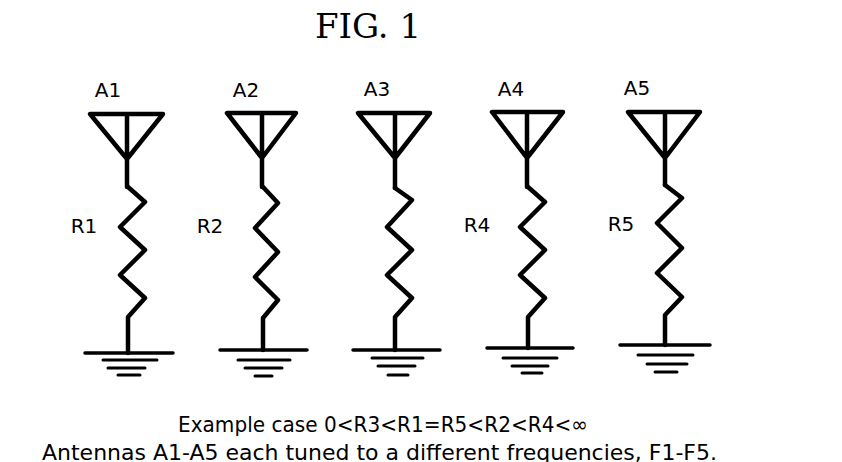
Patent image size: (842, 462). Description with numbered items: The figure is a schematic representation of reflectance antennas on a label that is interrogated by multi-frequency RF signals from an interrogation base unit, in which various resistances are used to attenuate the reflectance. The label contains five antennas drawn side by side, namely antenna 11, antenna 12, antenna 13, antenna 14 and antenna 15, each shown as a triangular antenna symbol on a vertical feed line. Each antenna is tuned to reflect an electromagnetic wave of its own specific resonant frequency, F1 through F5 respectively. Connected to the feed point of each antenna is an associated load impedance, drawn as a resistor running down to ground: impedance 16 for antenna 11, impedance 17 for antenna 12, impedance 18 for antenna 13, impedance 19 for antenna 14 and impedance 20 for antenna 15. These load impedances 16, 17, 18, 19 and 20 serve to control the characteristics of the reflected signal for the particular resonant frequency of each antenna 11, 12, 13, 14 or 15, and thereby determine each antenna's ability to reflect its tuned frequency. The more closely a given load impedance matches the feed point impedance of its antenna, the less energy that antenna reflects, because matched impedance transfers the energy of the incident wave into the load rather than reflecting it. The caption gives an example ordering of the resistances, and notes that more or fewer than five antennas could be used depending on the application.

The antenna 11 is at (102, 135).
The antenna 12 is at (234, 133).
The antenna 13 is at (371, 135).
The antenna 14 is at (506, 133).
The antenna 15 is at (643, 133).
The impedance 16 is at (145, 258).
The impedance 17 is at (277, 258).
The impedance 18 is at (403, 266).
The impedance 19 is at (537, 262).
The impedance 20 is at (677, 255).